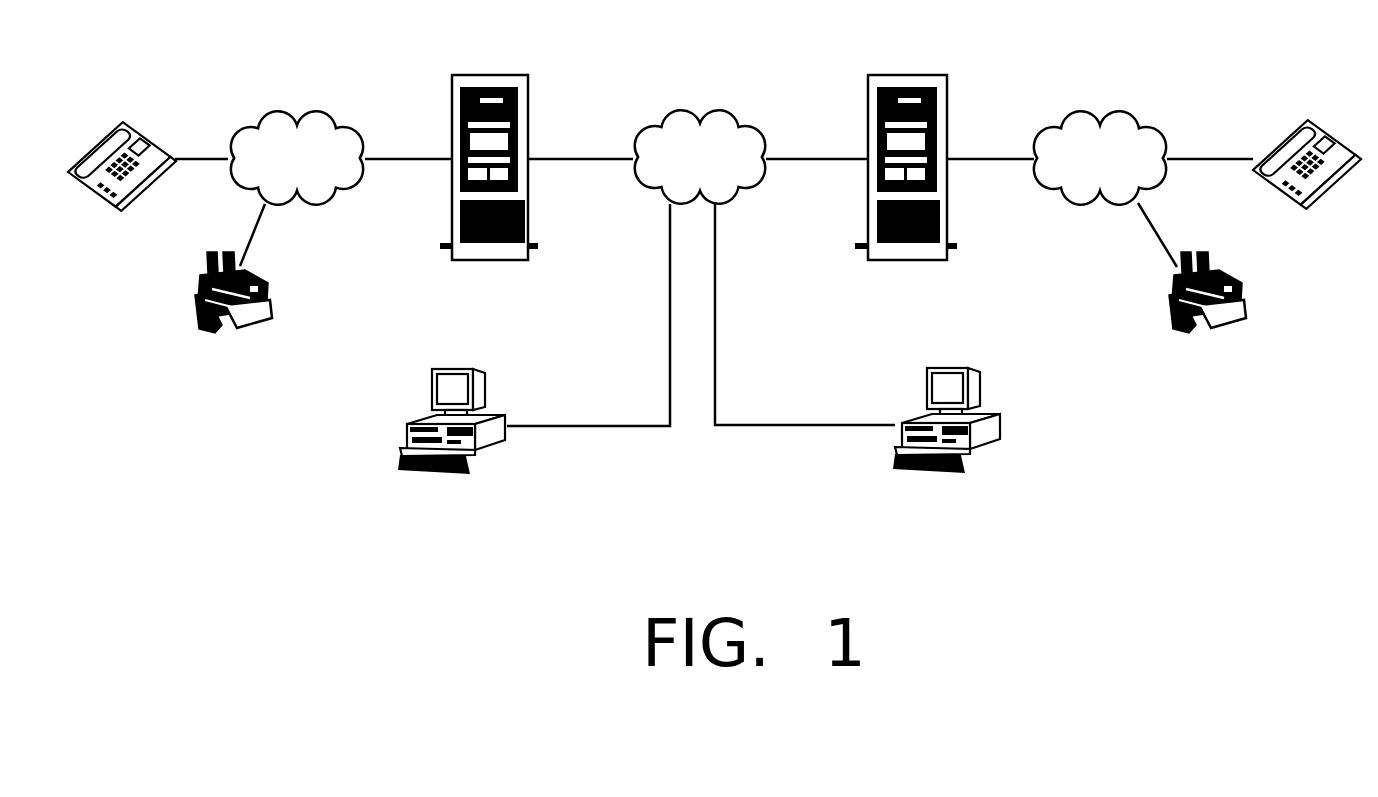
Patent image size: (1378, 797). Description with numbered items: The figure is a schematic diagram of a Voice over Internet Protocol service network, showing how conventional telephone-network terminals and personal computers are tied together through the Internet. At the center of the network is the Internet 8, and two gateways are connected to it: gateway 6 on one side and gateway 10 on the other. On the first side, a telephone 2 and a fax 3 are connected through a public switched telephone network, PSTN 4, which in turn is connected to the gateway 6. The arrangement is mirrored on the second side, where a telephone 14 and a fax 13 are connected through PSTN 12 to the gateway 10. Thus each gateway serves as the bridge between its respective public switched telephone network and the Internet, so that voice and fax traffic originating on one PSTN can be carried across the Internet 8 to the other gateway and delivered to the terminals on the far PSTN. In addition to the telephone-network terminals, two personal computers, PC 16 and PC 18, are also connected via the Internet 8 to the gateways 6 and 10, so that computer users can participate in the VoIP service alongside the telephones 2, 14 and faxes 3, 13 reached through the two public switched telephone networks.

The telephone 2 is at (138, 123).
The fax 3 is at (272, 291).
The public switched telephone network (PSTN) 4 is at (302, 110).
The gateway 6 is at (487, 75).
The Internet 8 is at (703, 108).
The gateway 10 is at (903, 75).
The PSTN 12 is at (1105, 110).
The fax 13 is at (1225, 272).
The telephone 14 is at (1315, 122).
The personal computer (PC) 16 is at (462, 470).
The personal computer (PC) 18 is at (955, 470).